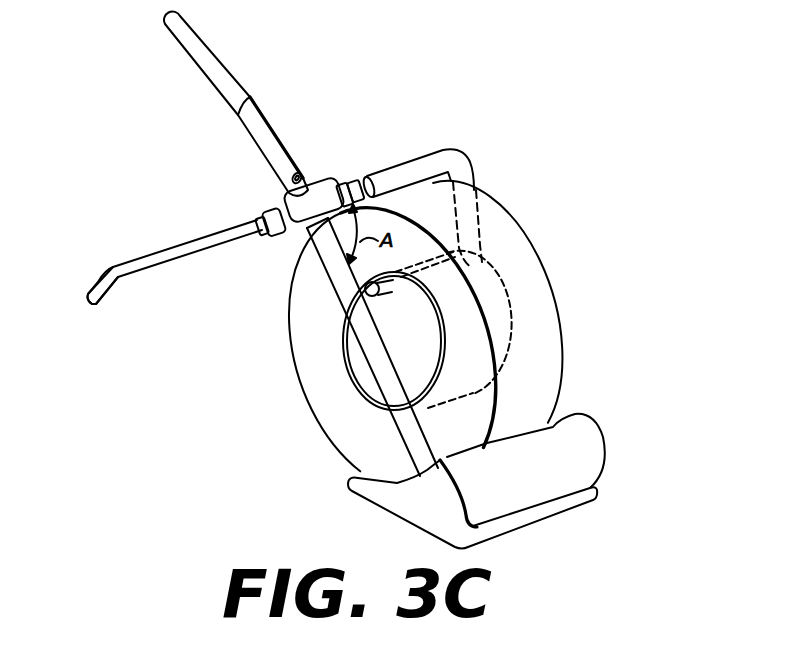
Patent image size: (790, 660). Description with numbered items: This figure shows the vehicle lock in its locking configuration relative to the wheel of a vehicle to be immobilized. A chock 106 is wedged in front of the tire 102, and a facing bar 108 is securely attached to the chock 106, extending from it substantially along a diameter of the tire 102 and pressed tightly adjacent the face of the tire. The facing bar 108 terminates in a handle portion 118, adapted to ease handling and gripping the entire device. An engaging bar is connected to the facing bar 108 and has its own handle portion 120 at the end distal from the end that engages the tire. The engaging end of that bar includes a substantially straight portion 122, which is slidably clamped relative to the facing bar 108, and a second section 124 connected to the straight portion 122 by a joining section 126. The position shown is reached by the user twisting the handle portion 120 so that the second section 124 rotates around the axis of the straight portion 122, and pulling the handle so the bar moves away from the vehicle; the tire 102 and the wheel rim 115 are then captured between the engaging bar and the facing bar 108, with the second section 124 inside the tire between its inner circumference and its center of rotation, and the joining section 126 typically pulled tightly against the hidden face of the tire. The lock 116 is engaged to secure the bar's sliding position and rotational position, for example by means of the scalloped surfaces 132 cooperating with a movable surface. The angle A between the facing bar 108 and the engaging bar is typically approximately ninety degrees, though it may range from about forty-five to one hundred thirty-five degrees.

The tire 102 is at (553, 350).
The chock 106 is at (580, 457).
The facing bar 108 is at (392, 390).
The wheel rim 115 is at (343, 341).
The lock 116 is at (300, 174).
The handle portion 118 is at (216, 58).
The handle portion 120 is at (107, 289).
The straight portion 122 is at (422, 158).
The second section 124 is at (402, 316).
The joining section 126 is at (476, 215).
The scalloped surfaces 132 is at (355, 182).